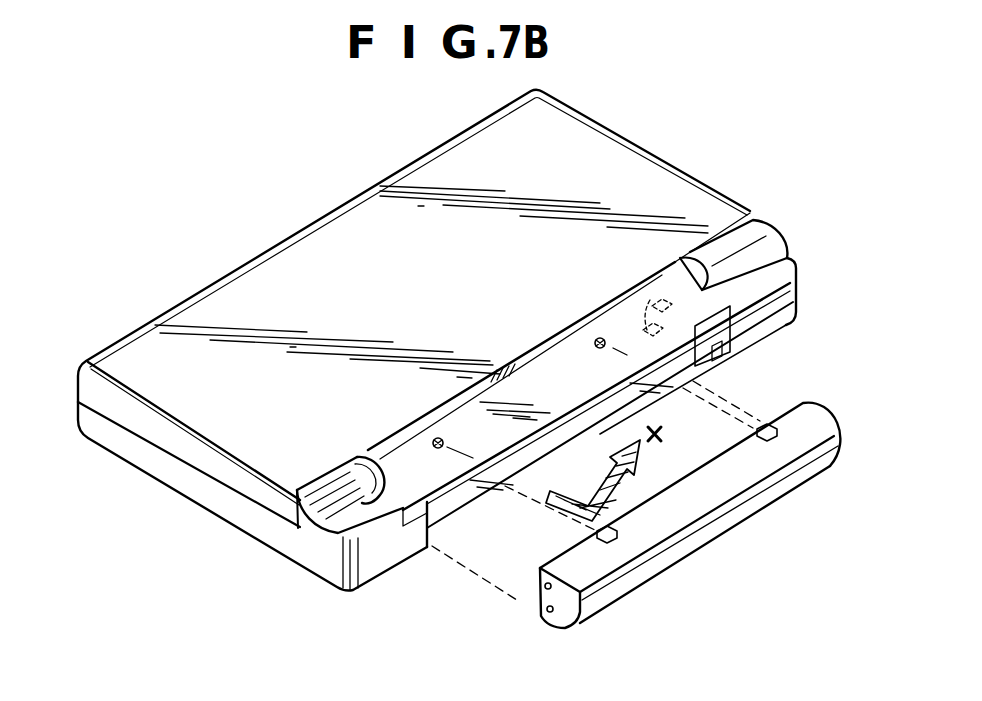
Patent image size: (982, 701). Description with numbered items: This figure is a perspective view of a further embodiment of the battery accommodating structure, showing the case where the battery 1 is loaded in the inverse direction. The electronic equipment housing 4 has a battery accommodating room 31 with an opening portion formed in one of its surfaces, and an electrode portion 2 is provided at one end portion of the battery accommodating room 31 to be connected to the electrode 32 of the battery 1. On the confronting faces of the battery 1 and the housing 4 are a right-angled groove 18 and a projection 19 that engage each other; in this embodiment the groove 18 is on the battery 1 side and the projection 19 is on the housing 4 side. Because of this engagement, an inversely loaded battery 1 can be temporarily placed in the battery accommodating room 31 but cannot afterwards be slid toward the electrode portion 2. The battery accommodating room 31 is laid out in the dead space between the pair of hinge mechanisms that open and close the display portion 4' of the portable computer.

The battery 1 is at (737, 512).
The electrode portion 2 is at (642, 300).
The electronic equipment housing 4 is at (437, 407).
The display portion 4' is at (414, 310).
The right-angled groove 18 is at (758, 428).
The projection 19 is at (600, 336).
The battery accommodating room 31 is at (567, 427).
The electrode 32 is at (543, 611).